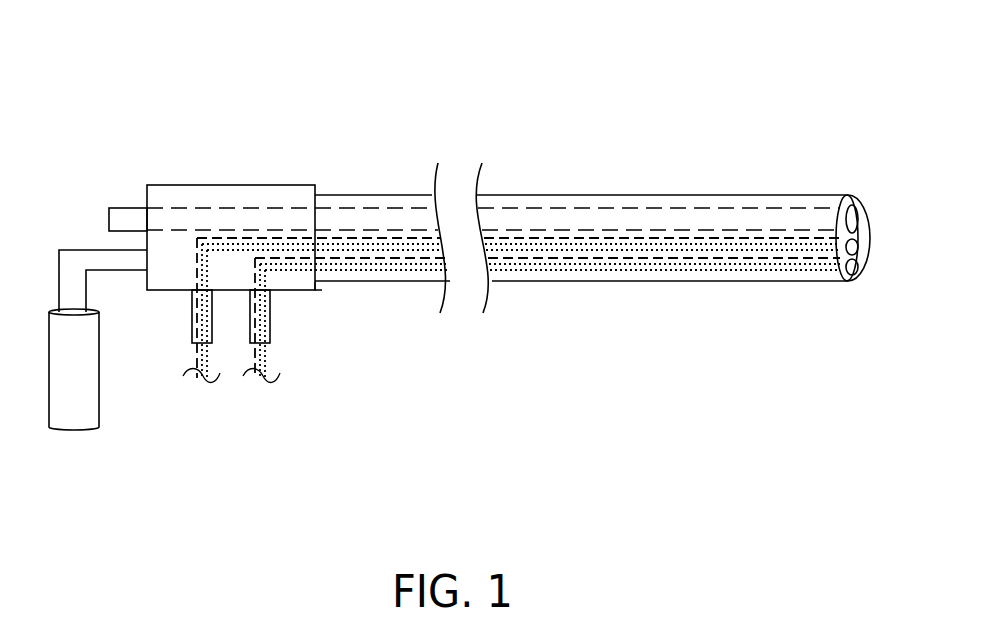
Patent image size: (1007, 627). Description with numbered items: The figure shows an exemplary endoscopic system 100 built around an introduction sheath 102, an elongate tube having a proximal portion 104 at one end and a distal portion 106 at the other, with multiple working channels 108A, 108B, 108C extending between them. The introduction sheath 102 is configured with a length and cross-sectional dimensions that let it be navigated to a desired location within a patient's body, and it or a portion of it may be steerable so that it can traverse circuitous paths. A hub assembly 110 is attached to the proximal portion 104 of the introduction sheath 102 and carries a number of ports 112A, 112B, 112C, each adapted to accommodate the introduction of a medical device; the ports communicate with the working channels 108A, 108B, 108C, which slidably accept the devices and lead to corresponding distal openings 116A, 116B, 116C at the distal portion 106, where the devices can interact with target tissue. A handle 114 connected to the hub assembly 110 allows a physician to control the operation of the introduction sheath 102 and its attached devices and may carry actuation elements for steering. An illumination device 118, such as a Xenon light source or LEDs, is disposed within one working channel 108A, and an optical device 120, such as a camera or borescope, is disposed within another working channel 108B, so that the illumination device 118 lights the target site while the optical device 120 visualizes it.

The endoscopic system 100 is at (121, 54).
The introduction sheath 102 is at (408, 195).
The proximal portion 104 is at (317, 288).
The distal portion 106 is at (852, 281).
The working channel 108A is at (598, 260).
The working channel 108B is at (563, 238).
The working channel 108C is at (532, 208).
The hub assembly 110 is at (255, 185).
The port 112A is at (270, 345).
The port 112B is at (212, 345).
The port 112C is at (121, 207).
The handle 114 is at (83, 428).
The distal opening 116A is at (849, 260).
The distal opening 116B is at (849, 240).
The distal opening 116C is at (848, 206).
The illumination device 118 is at (706, 264).
The optical device 120 is at (663, 250).